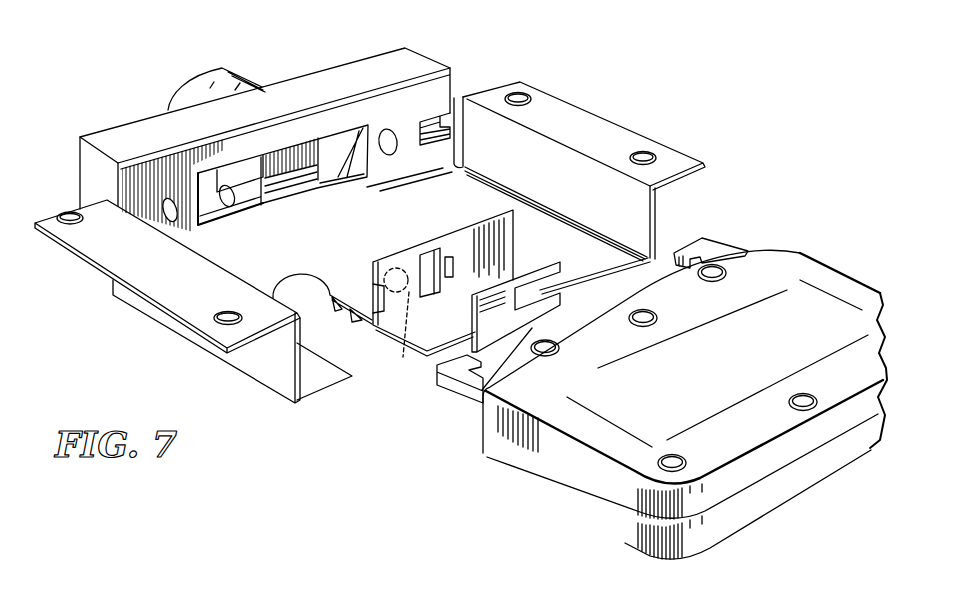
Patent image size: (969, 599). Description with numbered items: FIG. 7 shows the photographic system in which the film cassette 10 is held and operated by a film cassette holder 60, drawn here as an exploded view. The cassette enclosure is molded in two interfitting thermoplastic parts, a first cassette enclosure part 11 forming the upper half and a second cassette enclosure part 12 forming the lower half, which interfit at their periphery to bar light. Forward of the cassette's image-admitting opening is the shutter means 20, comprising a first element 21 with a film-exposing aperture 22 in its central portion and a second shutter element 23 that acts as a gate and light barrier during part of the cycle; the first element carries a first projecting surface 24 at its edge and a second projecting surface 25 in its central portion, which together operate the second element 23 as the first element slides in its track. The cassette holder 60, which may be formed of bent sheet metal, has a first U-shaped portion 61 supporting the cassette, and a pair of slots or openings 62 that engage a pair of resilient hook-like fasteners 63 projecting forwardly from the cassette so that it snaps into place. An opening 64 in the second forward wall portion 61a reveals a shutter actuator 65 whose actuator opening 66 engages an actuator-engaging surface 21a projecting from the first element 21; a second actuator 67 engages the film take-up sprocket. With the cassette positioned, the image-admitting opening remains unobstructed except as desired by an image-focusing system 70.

The film cassette 10 is at (683, 348).
The first cassette enclosure part 11 is at (570, 462).
The second cassette enclosure part 12 is at (587, 510).
The shutter means 20 is at (523, 236).
The first element 21 is at (460, 243).
The actuator-engaging surface 21a is at (400, 326).
The film-exposing aperture 22 is at (430, 252).
The second shutter element 23 is at (493, 337).
The first projecting surface 24 is at (372, 290).
The second projecting surface 25 is at (446, 254).
The film cassette holder 60 is at (391, 241).
The first U-shaped portion 61 is at (655, 215).
The second forward wall portion 61a is at (430, 92).
The slots or openings 62 is at (444, 98).
The hook-like fasteners 63 is at (706, 242).
The opening 64 is at (266, 144).
The shutter actuator 65 is at (211, 193).
The actuator opening 66 is at (226, 171).
The second actuator 67 is at (342, 310).
The image-focusing system 70 is at (260, 87).